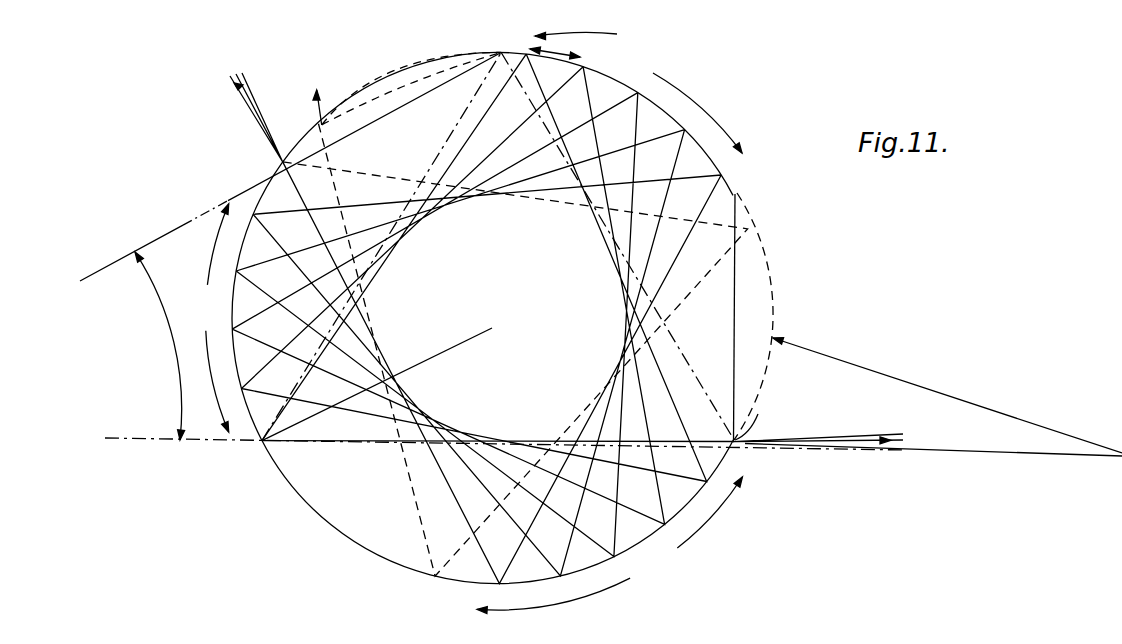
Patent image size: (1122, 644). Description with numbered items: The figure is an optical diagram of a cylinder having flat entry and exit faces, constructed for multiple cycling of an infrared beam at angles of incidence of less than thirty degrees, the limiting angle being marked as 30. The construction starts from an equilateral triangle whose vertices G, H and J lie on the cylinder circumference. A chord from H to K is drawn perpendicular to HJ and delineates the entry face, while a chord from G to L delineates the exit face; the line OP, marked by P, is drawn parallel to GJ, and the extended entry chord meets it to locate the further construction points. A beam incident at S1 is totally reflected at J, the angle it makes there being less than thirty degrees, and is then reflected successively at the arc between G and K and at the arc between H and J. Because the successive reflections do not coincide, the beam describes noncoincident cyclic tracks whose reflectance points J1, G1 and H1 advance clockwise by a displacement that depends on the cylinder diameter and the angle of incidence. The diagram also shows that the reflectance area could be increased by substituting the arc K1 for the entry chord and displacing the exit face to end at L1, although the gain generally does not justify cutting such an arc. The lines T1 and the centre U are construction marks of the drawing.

The vertex G of the equilateral triangle G is at (498, 236).
The reflectance point G' G1 is at (685, 103).
The line OP P is at (573, 53).
The chord end K is at (749, 308).
The arc HK' K1 is at (928, 323).
The incident beam point S' S1 is at (759, 419).
The vertex H of the equilateral triangle H is at (926, 456).
The reflectance point H' H1 is at (609, 545).
The vertex J of the equilateral triangle J is at (485, 456).
The reflectance point J' J1 is at (211, 318).
The chord end L is at (290, 167).
The displaced exit face end L' L1 is at (515, 333).
The tangent T' T1 is at (288, 158).
The center of rotation U is at (386, 377).
The thirty-degree angle limit 30 is at (153, 346).